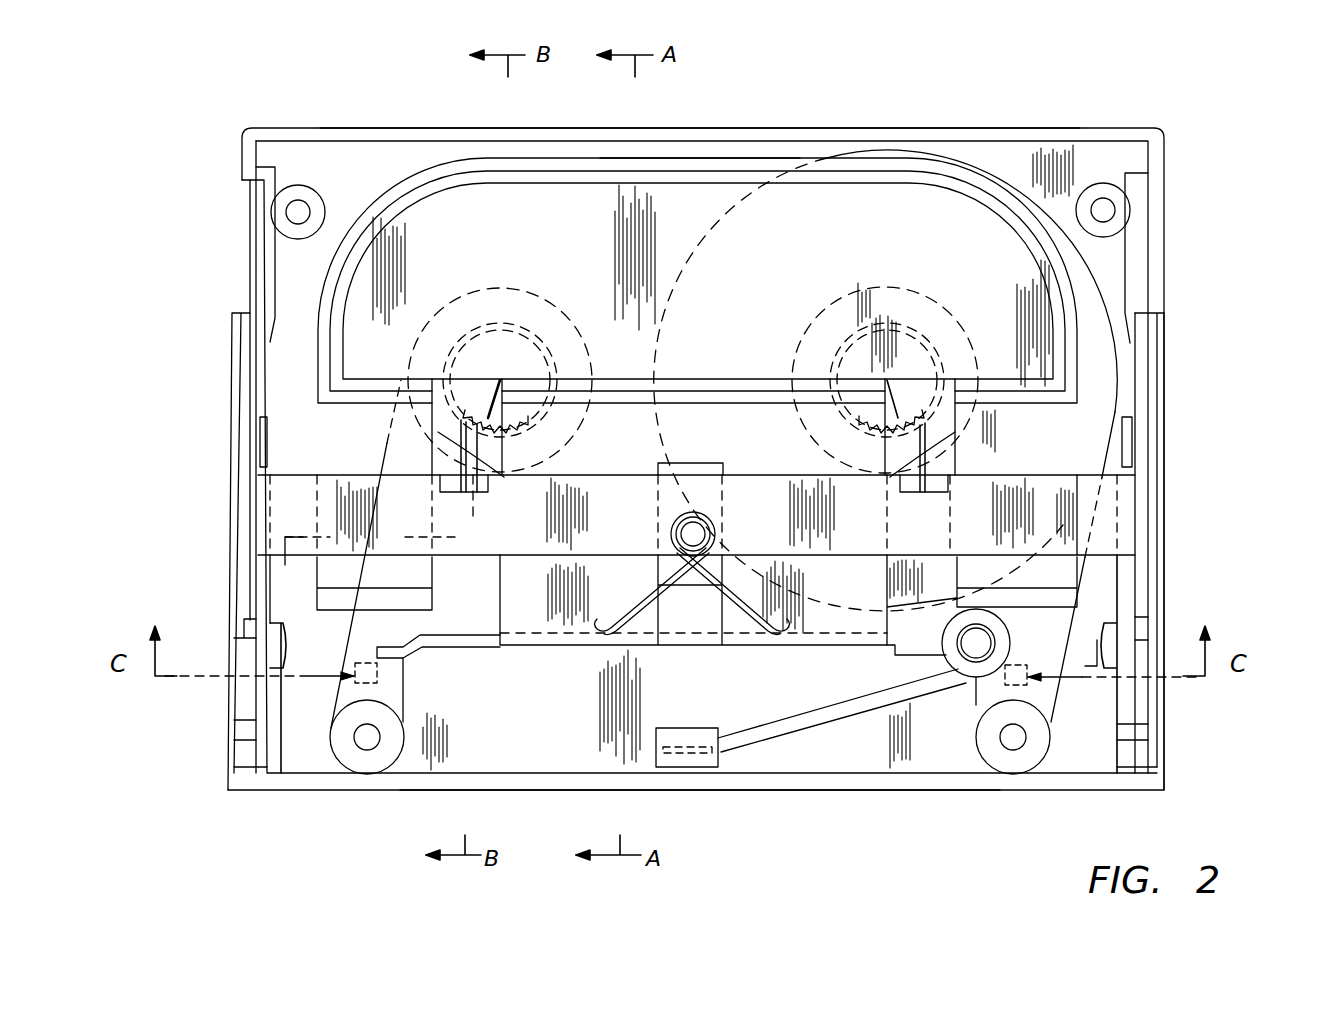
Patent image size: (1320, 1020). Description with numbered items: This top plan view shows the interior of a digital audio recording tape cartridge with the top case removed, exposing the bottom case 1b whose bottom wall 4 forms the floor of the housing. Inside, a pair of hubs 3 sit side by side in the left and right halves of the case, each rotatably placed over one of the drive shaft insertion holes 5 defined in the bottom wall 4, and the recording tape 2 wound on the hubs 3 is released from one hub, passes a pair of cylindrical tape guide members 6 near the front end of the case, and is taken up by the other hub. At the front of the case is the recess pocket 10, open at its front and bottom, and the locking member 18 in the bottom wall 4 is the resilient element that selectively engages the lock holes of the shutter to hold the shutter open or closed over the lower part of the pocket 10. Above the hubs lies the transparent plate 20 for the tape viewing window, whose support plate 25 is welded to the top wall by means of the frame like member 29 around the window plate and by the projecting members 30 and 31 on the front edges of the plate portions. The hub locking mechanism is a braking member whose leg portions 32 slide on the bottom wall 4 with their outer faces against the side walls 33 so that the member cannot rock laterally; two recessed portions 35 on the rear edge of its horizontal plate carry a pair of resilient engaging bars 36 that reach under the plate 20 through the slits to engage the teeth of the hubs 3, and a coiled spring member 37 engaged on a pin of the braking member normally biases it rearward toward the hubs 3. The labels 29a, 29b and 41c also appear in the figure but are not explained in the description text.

The bottom case 1b is at (985, 152).
The bottom wall 4 is at (375, 152).
The recess pocket 10 is at (556, 744).
The transparent plate 20 is at (240, 468).
The locking member 18 is at (1164, 522).
The recessed portions 35 is at (262, 602).
The engaging bars 36 is at (244, 716).
The recording tape 2 is at (342, 660).
The frame like member 29 is at (318, 403).
The cover top portion 29b is at (680, 195).
The hubs 3 is at (497, 292).
The drive shaft insertion holes 5 is at (555, 335).
The side walls 33 is at (1015, 440).
The leg portions 32 is at (455, 482).
The projecting member 30 is at (655, 474).
The spring member 37 is at (632, 606).
The cover bottom plate 29a is at (536, 618).
The support plate 25 is at (832, 712).
The projecting member 31 is at (681, 726).
The tape guide members 6 is at (367, 768).
The positioning hole 41c is at (382, 680).